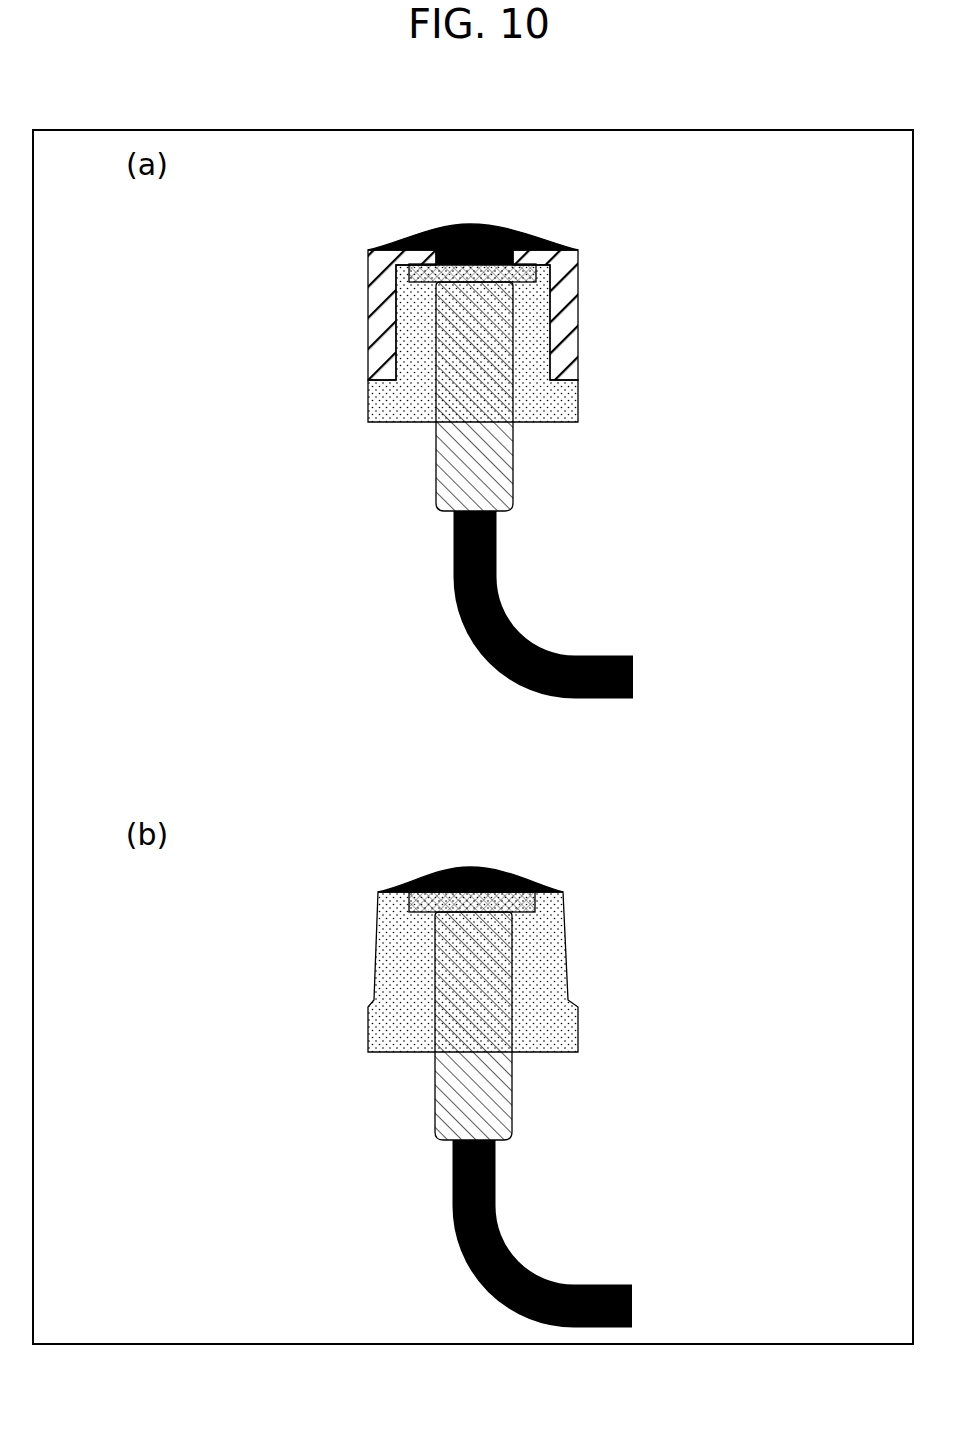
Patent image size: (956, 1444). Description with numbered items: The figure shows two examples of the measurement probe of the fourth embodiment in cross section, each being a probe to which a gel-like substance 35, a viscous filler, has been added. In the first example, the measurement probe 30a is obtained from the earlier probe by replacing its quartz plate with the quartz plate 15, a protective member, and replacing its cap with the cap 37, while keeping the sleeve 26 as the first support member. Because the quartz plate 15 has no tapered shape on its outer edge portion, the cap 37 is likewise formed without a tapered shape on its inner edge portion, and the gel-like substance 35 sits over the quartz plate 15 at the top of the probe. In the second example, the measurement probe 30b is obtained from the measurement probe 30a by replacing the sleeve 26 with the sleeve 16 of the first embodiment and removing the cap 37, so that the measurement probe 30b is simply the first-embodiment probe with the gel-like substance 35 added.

The quartz plate 15 is at (474, 270).
The gel-like substance 35 is at (413, 243).
The cap 37 is at (574, 317).
The sleeve 26 is at (542, 408).
The measurement probe 30a is at (358, 483).
The sleeve 16 is at (541, 1040).
The measurement probe 30b is at (358, 1112).